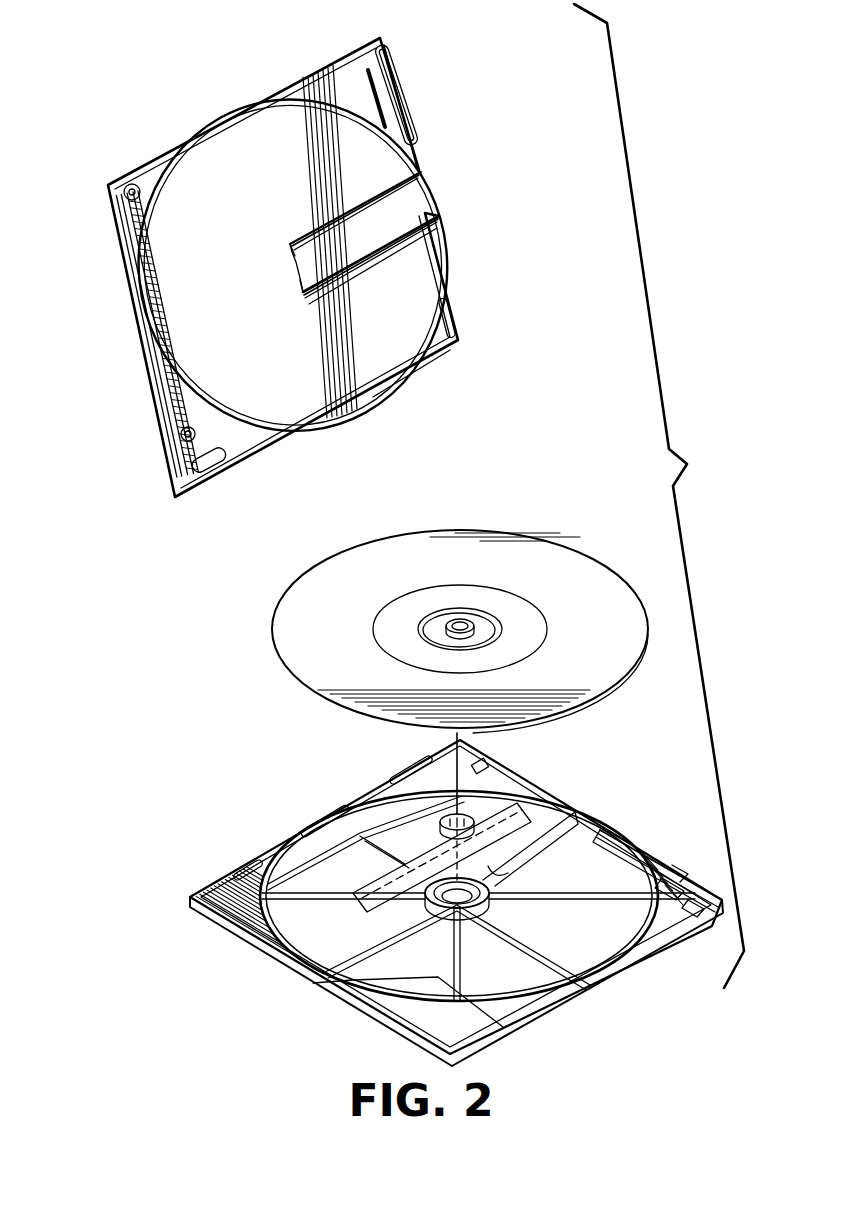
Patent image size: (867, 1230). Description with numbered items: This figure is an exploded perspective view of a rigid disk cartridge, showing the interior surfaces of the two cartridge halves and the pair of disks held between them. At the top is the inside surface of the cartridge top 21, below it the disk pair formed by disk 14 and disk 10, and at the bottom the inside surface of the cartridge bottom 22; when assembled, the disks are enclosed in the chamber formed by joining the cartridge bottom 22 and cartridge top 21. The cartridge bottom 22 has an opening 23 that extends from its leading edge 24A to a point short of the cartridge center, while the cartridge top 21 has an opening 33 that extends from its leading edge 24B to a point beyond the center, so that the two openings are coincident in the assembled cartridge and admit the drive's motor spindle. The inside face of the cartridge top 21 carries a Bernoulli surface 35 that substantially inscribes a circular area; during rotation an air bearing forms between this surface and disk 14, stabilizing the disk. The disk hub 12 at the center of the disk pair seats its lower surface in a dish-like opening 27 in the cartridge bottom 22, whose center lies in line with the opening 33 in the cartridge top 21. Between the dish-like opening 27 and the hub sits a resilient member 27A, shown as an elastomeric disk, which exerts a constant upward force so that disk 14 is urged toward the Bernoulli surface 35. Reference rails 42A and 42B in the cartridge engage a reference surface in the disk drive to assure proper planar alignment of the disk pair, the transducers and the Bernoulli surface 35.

The disk 10 is at (568, 708).
The disk hub 12 is at (481, 629).
The disk 14 is at (531, 548).
The cartridge top 21 is at (122, 272).
The cartridge bottom 22 is at (310, 988).
The opening 23 is at (578, 828).
The leading edge 24A is at (640, 852).
The leading edge 24B is at (421, 125).
The dish-like opening 27 is at (472, 918).
The resilient member 27A is at (438, 823).
The opening 33 is at (290, 292).
The Bernoulli surface 35 is at (266, 140).
The reference rail 42A is at (378, 244).
The reference rail 42B is at (316, 234).